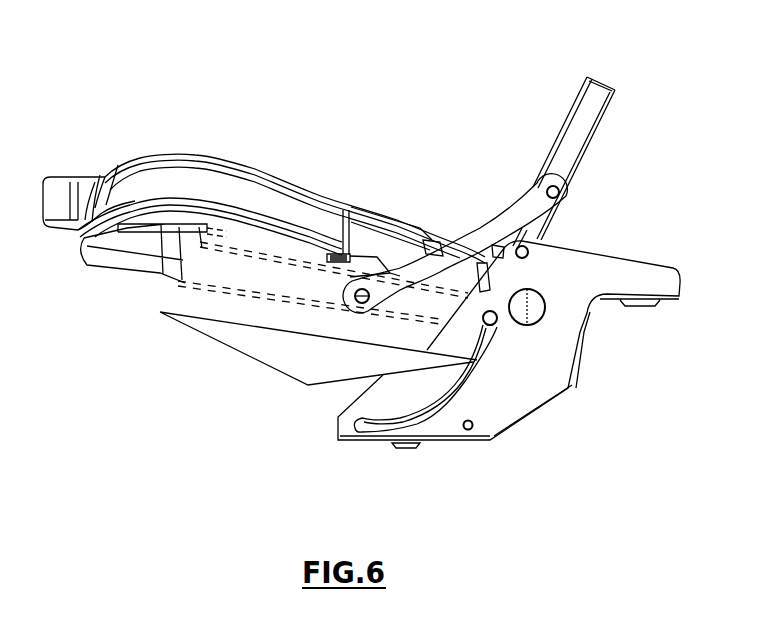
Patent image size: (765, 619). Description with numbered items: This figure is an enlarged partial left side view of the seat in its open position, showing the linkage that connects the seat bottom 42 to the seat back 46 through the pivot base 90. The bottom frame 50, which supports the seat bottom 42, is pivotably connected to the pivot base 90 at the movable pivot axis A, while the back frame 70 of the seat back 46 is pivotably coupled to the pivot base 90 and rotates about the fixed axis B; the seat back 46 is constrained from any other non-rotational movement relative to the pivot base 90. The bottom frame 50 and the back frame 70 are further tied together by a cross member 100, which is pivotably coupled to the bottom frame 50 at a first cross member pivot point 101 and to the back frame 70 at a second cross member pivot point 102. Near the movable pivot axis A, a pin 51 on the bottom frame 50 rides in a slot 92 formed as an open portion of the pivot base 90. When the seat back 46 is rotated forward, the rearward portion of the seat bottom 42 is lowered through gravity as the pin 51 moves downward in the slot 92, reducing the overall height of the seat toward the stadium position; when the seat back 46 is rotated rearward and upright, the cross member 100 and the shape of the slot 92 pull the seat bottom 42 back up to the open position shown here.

The seat bottom 42 is at (203, 161).
The seat back 46 is at (594, 107).
The seat bottom frame portion 50 is at (147, 262).
The pin 51 is at (500, 330).
The back frame 70 is at (603, 88).
The pivot base 90 is at (530, 400).
The slot 92 is at (435, 405).
The cross member 100 is at (483, 226).
The first cross member pivot point 101 is at (350, 278).
The second cross member pivot point 102 is at (550, 178).
The movable pivot axis A is at (493, 320).
The fixed axis B is at (537, 252).